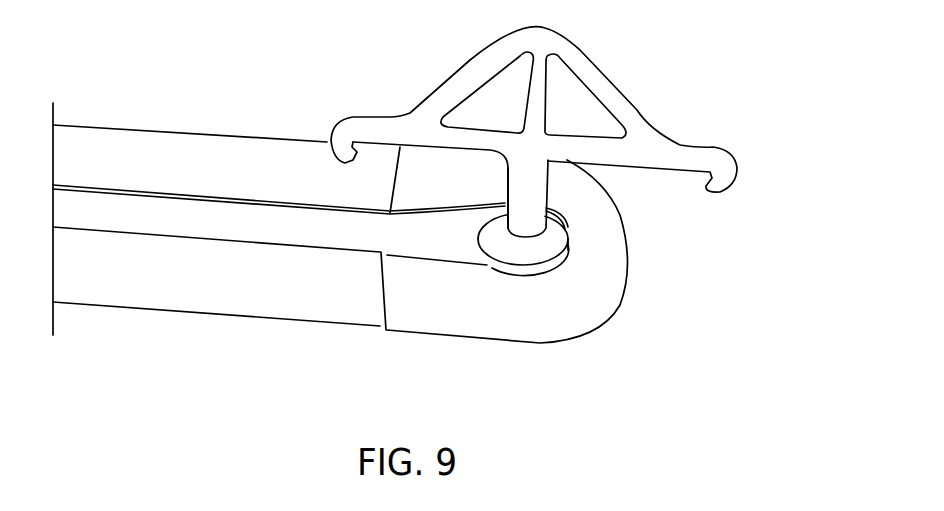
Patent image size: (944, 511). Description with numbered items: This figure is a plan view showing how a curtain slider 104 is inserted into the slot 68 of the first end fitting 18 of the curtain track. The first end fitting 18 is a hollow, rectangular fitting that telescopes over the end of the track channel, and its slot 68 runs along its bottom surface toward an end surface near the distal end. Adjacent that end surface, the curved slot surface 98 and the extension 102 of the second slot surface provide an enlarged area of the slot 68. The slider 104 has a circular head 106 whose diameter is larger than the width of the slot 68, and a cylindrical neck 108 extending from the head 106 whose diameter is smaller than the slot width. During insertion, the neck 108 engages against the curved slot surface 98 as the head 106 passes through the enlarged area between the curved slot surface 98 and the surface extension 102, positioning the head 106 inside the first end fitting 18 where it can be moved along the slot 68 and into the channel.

The first end fitting 18 is at (217, 284).
The slot 68 is at (474, 203).
The curved slot surface 98 is at (477, 197).
The extension of the second slot surface 102 is at (490, 265).
The slider 104 is at (741, 169).
The head 106 is at (550, 247).
The neck 108 is at (535, 193).